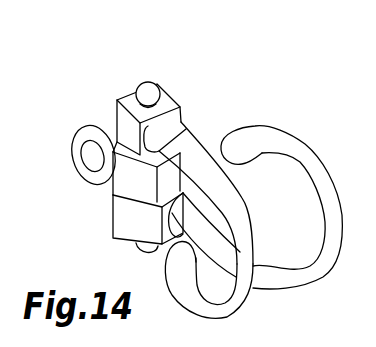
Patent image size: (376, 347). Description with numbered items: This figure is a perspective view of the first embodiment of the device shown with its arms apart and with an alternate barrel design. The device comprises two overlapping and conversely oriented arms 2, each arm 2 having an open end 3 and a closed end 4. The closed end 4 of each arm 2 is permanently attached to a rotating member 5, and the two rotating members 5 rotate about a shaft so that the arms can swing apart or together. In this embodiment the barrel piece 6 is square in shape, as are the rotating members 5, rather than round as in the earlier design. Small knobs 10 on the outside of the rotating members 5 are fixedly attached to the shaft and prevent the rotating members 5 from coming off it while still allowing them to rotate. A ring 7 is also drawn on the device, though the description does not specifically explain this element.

The arm 2 is at (325, 180).
The open end 3 is at (240, 143).
The closed end 4 is at (186, 140).
The rotating member 5 is at (124, 107).
The barrel piece 6 is at (117, 191).
The ring 7 is at (78, 138).
The knob 10 is at (148, 86).